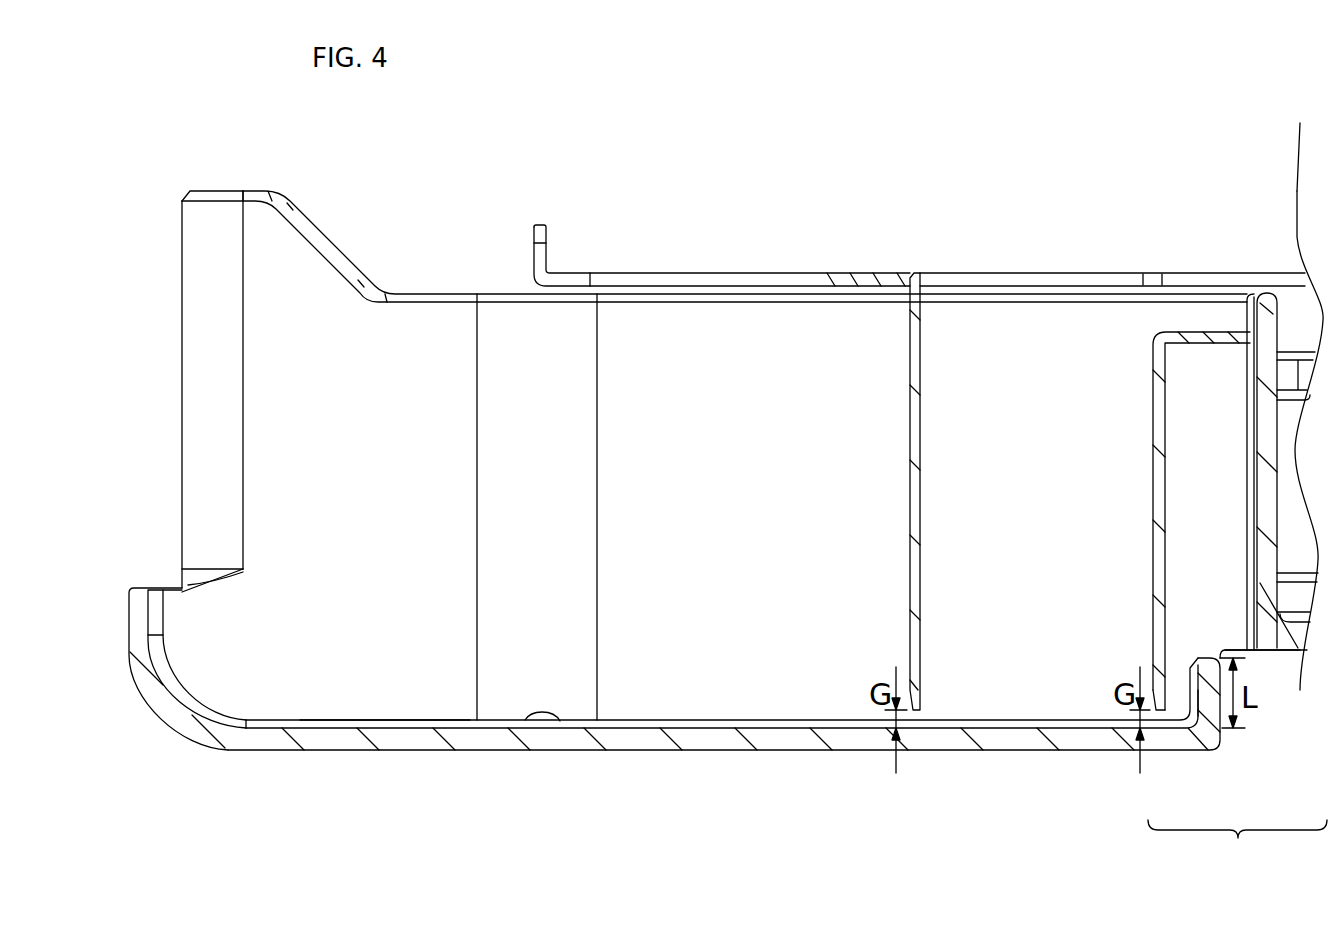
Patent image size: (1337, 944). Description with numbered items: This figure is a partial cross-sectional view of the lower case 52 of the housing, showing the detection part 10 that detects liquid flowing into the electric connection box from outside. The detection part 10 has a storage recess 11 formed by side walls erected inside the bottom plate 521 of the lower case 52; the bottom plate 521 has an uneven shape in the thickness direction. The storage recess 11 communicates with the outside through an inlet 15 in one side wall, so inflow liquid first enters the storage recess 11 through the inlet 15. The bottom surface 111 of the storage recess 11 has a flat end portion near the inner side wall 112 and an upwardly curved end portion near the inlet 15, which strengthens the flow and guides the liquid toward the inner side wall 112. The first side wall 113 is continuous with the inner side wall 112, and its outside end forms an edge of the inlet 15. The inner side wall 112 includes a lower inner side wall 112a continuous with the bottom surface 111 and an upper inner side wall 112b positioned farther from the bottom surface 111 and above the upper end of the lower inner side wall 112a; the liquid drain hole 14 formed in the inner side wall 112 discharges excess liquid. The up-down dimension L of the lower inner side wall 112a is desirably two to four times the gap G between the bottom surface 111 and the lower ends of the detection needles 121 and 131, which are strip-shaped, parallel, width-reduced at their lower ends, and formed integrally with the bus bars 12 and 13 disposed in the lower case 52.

The detection part 10 is at (157, 388).
The storage recess 11 is at (265, 690).
The bus bar 12 is at (1047, 280).
The bus bar 13 is at (1193, 337).
The liquid drain hole 14 is at (1230, 635).
The inlet 15 is at (157, 584).
The lower case 52 is at (217, 197).
The bottom surface 111 is at (525, 724).
The inner side wall 112 is at (1237, 852).
The lower inner side wall 112a is at (1203, 693).
The upper inner side wall 112b is at (1262, 587).
The first side wall 113 is at (340, 702).
The detection needle 121 is at (917, 370).
The detection needle 131 is at (1148, 380).
The bottom plate 521 is at (790, 735).